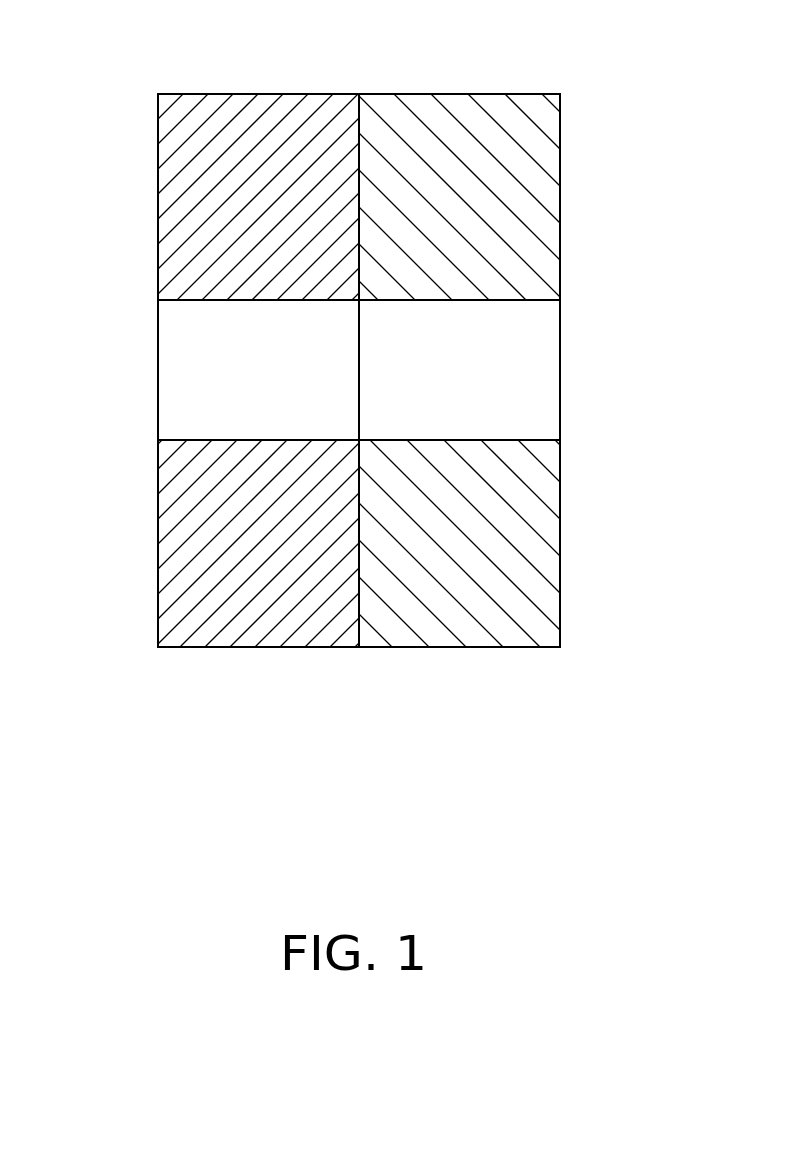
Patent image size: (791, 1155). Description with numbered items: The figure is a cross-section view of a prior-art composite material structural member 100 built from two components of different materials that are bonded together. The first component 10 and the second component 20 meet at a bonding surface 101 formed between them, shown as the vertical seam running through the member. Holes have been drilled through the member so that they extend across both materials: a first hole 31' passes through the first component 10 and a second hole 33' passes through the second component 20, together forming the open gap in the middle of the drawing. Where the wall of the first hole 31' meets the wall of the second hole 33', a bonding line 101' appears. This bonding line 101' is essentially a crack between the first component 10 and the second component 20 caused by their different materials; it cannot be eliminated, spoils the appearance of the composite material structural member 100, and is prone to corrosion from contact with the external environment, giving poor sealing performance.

The composite material structural member 100 is at (457, 50).
The second component 20 is at (287, 133).
The first component 10 is at (405, 135).
The bonding surface 101 is at (498, 543).
The bonding line 101' is at (217, 370).
The second hole 33' is at (215, 370).
The first hole 31' is at (503, 370).